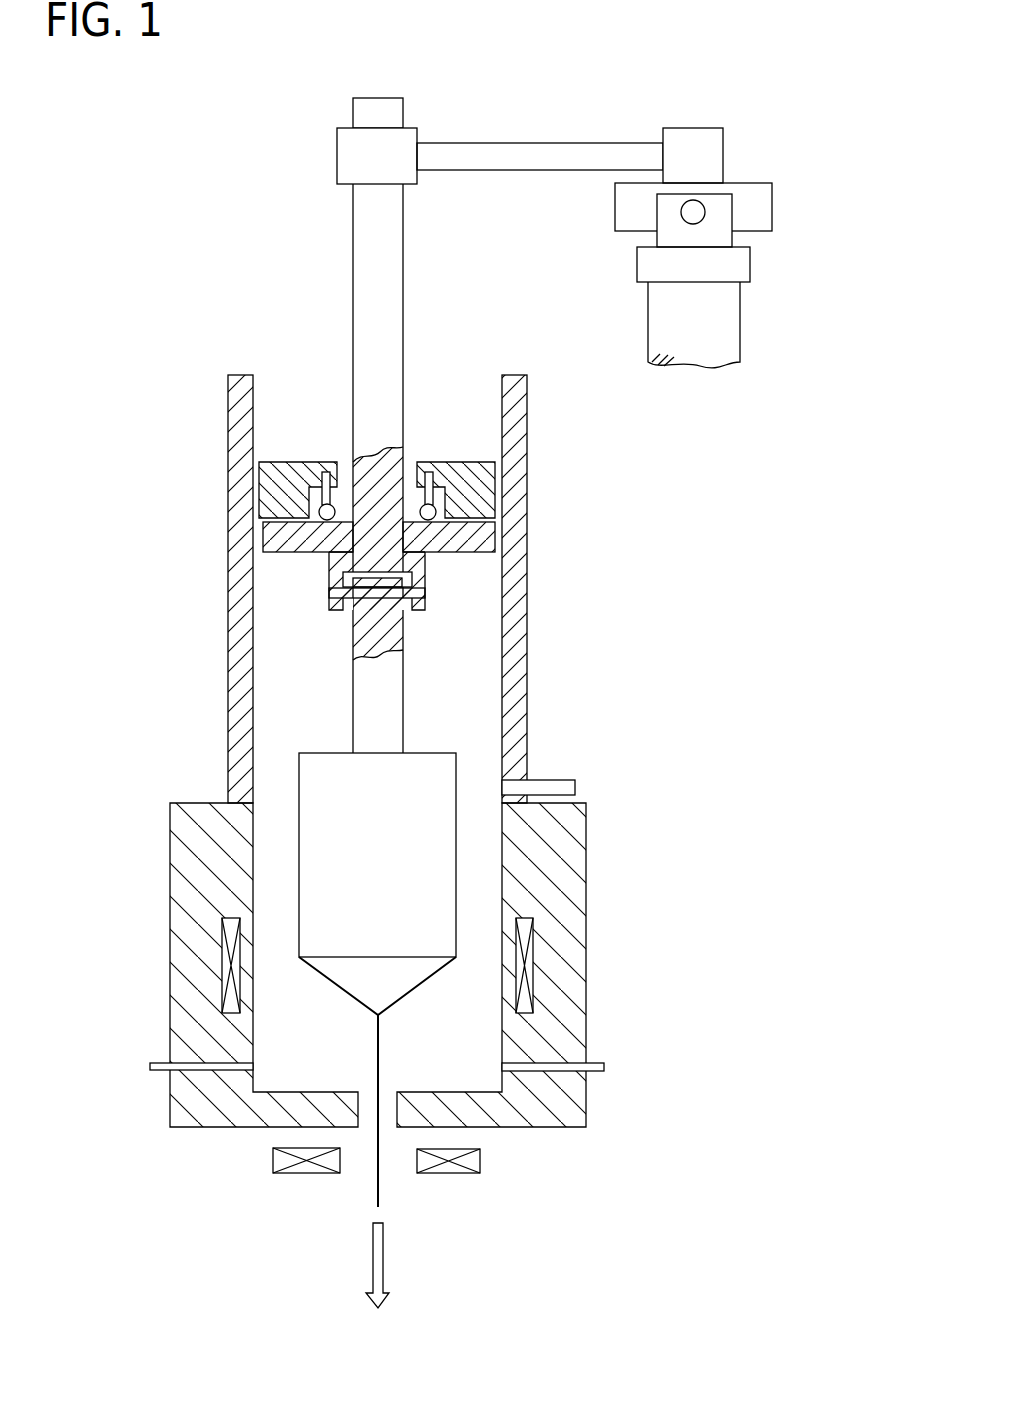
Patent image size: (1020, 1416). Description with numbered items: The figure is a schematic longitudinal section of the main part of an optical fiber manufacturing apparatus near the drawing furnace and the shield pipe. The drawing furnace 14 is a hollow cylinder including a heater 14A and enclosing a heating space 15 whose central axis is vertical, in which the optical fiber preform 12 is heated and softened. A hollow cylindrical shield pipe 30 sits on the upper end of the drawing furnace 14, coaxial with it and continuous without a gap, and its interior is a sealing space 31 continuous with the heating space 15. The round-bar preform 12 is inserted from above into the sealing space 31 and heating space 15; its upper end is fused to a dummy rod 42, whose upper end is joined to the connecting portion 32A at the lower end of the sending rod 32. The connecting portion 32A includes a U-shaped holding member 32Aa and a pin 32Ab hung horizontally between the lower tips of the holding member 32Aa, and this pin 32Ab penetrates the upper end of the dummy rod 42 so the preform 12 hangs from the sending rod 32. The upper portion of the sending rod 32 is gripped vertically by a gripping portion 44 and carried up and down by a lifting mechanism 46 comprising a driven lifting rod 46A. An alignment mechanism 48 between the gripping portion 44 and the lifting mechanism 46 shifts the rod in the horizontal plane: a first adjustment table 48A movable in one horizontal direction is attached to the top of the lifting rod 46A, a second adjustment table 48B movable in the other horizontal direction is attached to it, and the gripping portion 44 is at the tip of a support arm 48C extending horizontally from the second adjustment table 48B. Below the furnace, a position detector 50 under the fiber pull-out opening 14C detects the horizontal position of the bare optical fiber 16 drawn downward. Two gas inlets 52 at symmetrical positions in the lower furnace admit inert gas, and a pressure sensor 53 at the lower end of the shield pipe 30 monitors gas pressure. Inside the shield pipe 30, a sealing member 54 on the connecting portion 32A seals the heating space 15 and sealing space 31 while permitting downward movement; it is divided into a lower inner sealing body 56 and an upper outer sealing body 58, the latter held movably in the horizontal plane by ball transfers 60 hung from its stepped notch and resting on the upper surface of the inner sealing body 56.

The optical fiber preform 12 is at (413, 862).
The drawing furnace 14 is at (383, 1029).
The heater 14A is at (528, 972).
The fiber pull-out opening 14C is at (387, 1122).
The heating space 15 is at (277, 883).
The bare optical fiber 16 is at (372, 1178).
The shield pipe 30 is at (517, 669).
The sealing space 31 is at (470, 635).
The sending rod 32 is at (368, 293).
The connecting portion 32A is at (384, 553).
The holding member 32Aa is at (425, 580).
The pin 32Ab is at (425, 595).
The dummy rod 42 is at (377, 715).
The gripping portion 44 is at (347, 157).
The lifting mechanism 46 is at (761, 311).
The lifting rod 46A is at (720, 333).
The alignment mechanism 48 is at (643, 149).
The first adjustment table 48A is at (755, 210).
The second adjustment table 48B is at (692, 137).
The support arm 48C is at (550, 140).
The position detector 50 is at (480, 1160).
The gas inlet 52 is at (207, 1068).
The pressure sensor 53 is at (553, 787).
The sealing member 54 is at (331, 487).
The inner sealing body 56 is at (280, 535).
The outer sealing body 58 is at (272, 493).
The ball transfer 60 is at (320, 508).